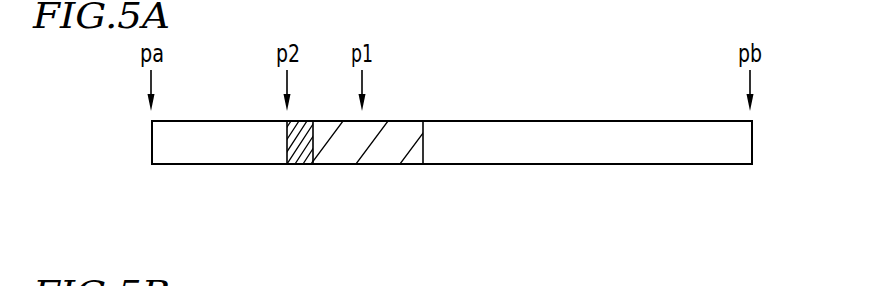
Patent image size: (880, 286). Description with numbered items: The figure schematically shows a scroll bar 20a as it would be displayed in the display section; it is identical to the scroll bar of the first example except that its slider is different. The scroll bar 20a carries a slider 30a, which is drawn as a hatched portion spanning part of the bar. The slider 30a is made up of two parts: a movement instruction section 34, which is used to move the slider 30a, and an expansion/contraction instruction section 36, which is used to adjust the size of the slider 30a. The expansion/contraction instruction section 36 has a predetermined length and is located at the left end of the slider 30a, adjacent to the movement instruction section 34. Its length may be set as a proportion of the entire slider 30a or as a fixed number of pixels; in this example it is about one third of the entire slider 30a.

The scroll bar 20a is at (752, 146).
The slider 30a is at (357, 192).
The movement instruction section 34 is at (393, 171).
The expansion/contraction instruction section 36 is at (298, 164).